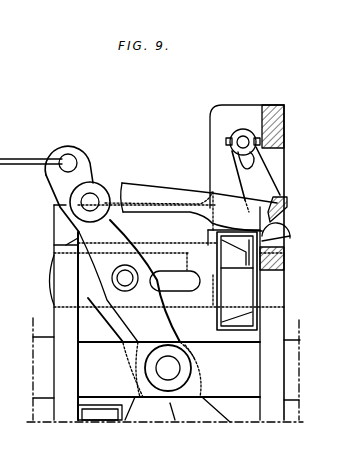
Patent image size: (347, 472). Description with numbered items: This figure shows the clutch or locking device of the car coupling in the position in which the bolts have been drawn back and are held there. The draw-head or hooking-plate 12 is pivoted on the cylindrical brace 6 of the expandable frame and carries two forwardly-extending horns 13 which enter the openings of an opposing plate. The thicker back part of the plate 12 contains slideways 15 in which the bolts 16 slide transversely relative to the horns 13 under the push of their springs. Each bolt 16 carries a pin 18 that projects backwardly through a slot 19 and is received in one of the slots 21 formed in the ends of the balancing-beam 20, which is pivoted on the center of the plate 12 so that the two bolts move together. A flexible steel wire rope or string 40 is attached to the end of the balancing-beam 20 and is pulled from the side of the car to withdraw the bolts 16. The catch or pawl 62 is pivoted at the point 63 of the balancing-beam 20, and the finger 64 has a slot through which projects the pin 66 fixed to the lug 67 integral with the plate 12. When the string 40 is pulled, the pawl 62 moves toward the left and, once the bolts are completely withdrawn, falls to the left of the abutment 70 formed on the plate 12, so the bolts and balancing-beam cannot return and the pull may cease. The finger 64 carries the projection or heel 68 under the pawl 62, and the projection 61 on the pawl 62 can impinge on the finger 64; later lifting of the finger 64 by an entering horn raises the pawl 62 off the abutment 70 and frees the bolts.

The cylindrical brace 6 is at (165, 263).
The draw-head or hooking-plate 12 is at (170, 353).
The horns or projections 13 is at (237, 281).
The slideways 15 is at (192, 252).
The bolts 16 is at (48, 290).
The pin 18 is at (125, 278).
The slot 19 is at (175, 281).
The balancing-beam 20 is at (144, 308).
The slots 21 is at (118, 286).
The flexible steel wire rope or string 40 is at (25, 158).
The projection 61 is at (118, 190).
The catch or pawl 62 is at (190, 187).
The pivot point 63 is at (97, 190).
The finger 64 is at (256, 179).
The pin 66 is at (244, 138).
The lug 67 is at (212, 125).
The projection or heel 68 is at (284, 233).
The abutment or pin 70 is at (287, 200).